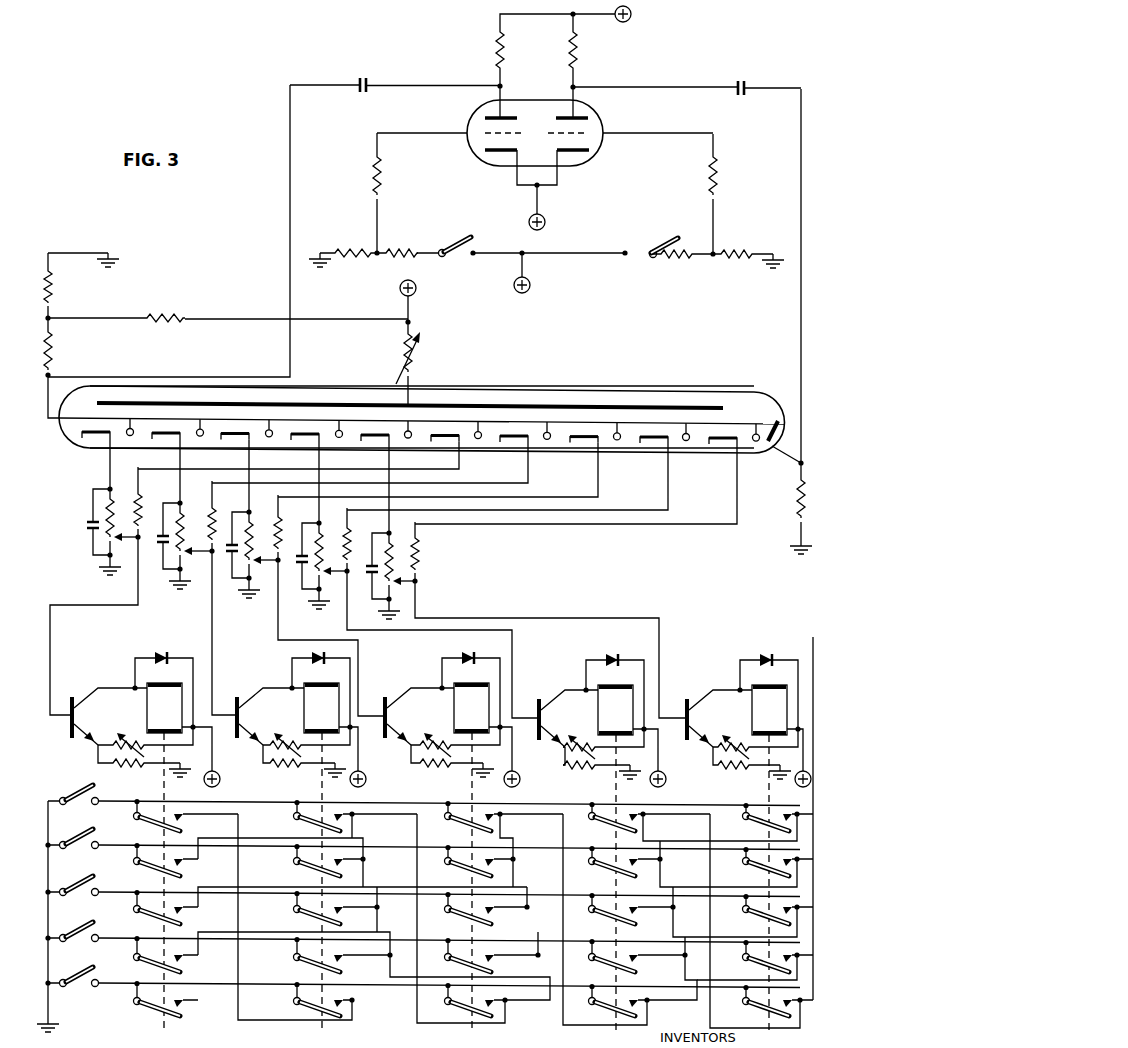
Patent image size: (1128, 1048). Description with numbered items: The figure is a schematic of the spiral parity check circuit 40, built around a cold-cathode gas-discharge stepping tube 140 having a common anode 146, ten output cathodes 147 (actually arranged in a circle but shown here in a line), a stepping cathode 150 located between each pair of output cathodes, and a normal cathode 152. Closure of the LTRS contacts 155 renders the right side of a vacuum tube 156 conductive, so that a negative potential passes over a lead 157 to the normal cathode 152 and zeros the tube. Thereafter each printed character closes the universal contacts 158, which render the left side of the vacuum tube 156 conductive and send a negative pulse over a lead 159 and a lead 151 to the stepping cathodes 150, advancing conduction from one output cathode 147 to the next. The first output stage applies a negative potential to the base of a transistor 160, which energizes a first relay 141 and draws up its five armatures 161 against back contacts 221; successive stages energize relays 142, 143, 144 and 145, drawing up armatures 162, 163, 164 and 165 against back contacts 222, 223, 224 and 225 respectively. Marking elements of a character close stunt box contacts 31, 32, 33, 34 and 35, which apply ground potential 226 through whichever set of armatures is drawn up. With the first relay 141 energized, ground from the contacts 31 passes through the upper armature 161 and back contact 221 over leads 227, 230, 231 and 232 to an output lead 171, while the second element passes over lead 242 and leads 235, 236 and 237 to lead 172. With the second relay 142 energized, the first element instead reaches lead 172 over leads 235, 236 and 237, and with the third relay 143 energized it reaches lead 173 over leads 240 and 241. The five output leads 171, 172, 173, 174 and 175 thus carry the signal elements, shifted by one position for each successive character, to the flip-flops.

The stunt box contacts 31 is at (82, 794).
The stunt box contacts 32 is at (92, 836).
The stunt box contacts 33 is at (92, 882).
The stunt box contacts 34 is at (92, 929).
The stunt box contacts 35 is at (92, 974).
The circuit 40 is at (244, 272).
The stepping tube 140 is at (426, 416).
The relay 141 is at (146, 709).
The relay 142 is at (303, 709).
The relay 143 is at (453, 709).
The relay 144 is at (597, 711).
The relay 145 is at (751, 711).
The common anode 146 is at (358, 402).
The output cathodes 147 is at (92, 442).
The stepping cathode 150 is at (132, 438).
The lead 151 is at (54, 386).
The normal cathode 152 is at (778, 404).
The LTRS contacts 155 is at (642, 261).
The vacuum tube 156 is at (606, 121).
The lead 157 is at (701, 88).
The universal contacts 158 is at (459, 258).
The lead 159 is at (313, 85).
The transistor 160 is at (71, 697).
The armatures 161 is at (153, 824).
The armatures 162 is at (302, 824).
The armatures 163 is at (457, 822).
The armatures 164 is at (603, 822).
The armatures 165 is at (754, 824).
The output lead 171 is at (810, 861).
The output lead 172 is at (810, 907).
The output lead 173 is at (813, 955).
The output lead 174 is at (813, 1000).
The output lead 175 is at (810, 813).
The back contacts 221 is at (179, 814).
The back contacts 222 is at (351, 814).
The back contacts 223 is at (497, 814).
The back contacts 224 is at (644, 814).
The back contacts 225 is at (766, 814).
The ground potential 226 is at (68, 1004).
The lead 227 is at (308, 1022).
The lead 230 is at (396, 1022).
The lead 231 is at (531, 932).
The lead 232 is at (700, 886).
The lead 235 is at (466, 1025).
The lead 236 is at (547, 1021).
The lead 237 is at (676, 935).
The lead 240 is at (563, 812).
The lead 241 is at (686, 980).
The lead 242 is at (255, 839).